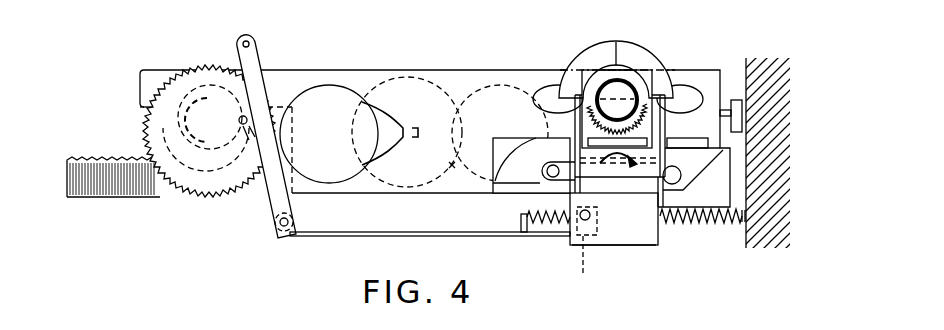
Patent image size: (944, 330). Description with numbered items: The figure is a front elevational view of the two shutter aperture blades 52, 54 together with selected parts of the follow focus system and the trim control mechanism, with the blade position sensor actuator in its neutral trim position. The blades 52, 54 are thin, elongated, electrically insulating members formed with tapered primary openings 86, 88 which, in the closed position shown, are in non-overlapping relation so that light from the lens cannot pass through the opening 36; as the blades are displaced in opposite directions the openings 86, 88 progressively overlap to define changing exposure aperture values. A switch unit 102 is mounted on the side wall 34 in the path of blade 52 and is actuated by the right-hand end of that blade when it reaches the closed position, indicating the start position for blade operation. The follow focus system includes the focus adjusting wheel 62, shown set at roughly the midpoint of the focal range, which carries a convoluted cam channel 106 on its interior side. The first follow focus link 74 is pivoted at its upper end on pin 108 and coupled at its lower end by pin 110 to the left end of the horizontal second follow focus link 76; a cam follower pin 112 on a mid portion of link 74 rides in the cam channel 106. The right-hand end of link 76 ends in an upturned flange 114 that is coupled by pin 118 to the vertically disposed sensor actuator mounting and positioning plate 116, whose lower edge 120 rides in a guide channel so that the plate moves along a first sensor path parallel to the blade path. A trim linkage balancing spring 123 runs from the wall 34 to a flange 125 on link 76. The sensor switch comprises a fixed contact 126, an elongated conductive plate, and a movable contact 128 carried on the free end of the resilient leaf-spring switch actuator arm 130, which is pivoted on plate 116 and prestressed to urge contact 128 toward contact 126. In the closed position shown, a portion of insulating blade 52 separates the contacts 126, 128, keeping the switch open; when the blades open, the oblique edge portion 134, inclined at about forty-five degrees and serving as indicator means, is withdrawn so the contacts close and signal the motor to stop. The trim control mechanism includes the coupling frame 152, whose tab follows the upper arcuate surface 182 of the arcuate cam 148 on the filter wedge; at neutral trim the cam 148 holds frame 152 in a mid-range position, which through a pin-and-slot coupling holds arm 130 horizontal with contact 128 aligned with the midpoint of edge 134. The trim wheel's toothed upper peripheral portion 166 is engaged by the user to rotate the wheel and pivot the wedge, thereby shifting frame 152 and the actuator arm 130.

The side wall 34 is at (757, 154).
The opening 36 is at (421, 108).
The shutter aperture blade 52 is at (522, 184).
The shutter aperture blade 54 is at (540, 82).
The focus adjusting wheel 62 is at (203, 193).
The first follow focus link 74 is at (258, 60).
The second follow focus link 76 is at (382, 237).
The primary opening 86 is at (499, 110).
The primary opening 88 is at (323, 107).
The switch unit 102 is at (738, 100).
The cam channel 106 is at (198, 96).
The pin 108 is at (250, 40).
The pin 110 is at (283, 228).
The cam follower pin 112 is at (239, 120).
The upturned flange 114 is at (582, 264).
The sensor actuator mounting and positioning plate 116 is at (643, 236).
The pin 118 is at (590, 217).
The lower edge 120 is at (615, 246).
The trim linkage balancing spring 123 is at (555, 224).
The flange 125 is at (523, 217).
The fixed contact 126 is at (700, 197).
The movable contact 128 is at (675, 170).
The switch actuator arm 130 is at (557, 162).
The oblique edge portion 134 is at (712, 173).
The arcuate cam 148 is at (621, 158).
The coupling frame 152 is at (580, 103).
The upper peripheral portion 166 is at (660, 55).
The upper arcuate surface 182 is at (638, 137).